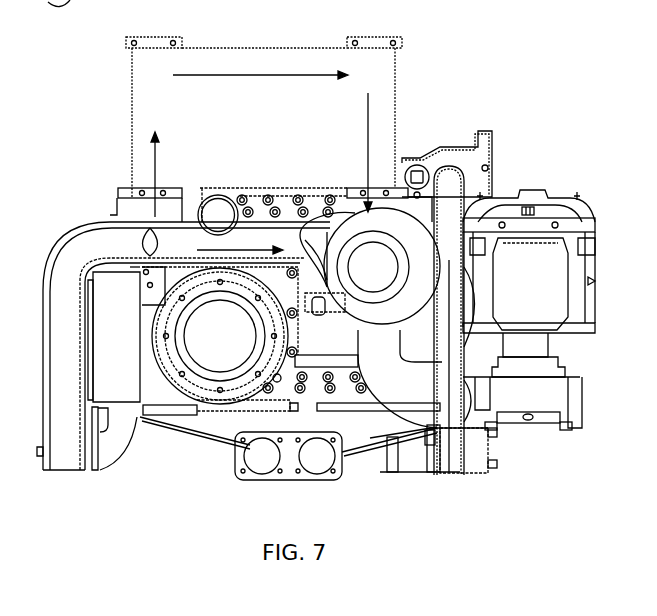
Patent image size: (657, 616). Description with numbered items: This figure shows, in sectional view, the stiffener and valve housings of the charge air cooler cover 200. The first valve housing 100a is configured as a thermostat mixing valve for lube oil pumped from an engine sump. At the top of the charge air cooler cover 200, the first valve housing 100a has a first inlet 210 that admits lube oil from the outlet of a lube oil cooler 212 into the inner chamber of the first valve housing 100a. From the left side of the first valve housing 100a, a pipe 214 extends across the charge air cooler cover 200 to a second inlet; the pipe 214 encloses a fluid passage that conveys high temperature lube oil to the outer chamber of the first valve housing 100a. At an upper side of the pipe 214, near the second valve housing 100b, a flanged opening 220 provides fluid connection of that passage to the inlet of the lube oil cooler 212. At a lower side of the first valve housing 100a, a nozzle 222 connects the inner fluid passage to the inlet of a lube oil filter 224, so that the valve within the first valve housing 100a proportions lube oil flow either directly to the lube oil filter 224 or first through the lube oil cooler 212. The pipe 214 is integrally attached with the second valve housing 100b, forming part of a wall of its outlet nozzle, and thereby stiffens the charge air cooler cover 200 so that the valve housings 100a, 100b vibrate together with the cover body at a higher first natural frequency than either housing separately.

The charge air cooler cover 200 is at (495, 108).
The first inlet 210 is at (397, 185).
The lube oil cooler 212 is at (283, 138).
The pipe 214 is at (188, 188).
The flanged opening 220 is at (130, 187).
The nozzle 222 is at (448, 398).
The lube oil filter 224 is at (543, 300).
The first valve housing 100a is at (396, 278).
The second valve housing 100b is at (238, 348).